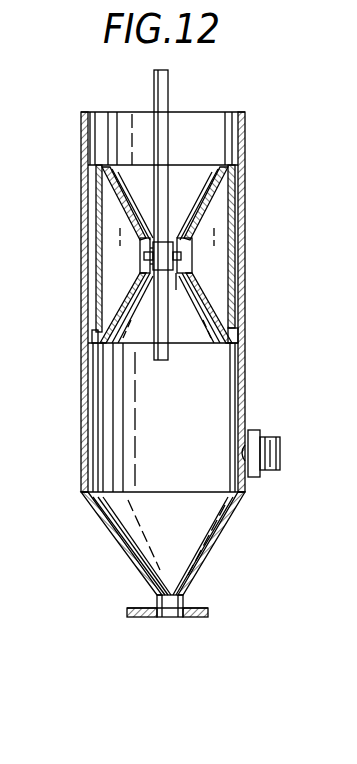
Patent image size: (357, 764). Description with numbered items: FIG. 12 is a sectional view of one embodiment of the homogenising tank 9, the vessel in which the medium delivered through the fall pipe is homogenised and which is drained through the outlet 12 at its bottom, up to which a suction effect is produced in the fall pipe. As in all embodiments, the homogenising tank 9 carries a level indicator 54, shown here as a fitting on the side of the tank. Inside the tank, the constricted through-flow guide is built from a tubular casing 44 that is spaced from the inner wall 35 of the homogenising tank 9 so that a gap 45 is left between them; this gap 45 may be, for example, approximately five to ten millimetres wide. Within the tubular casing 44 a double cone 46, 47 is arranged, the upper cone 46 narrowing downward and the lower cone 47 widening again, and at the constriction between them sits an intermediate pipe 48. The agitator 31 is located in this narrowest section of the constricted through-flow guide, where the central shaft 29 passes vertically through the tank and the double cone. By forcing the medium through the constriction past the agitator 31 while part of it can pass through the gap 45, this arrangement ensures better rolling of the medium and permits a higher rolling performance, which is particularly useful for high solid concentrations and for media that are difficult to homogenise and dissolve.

The homogenising tank 9 is at (247, 133).
The outlet 12 is at (173, 603).
The rod 29 is at (168, 78).
The agitator 31 is at (176, 275).
The inner wall 35 is at (232, 378).
The tubular casing 44 is at (97, 232).
The gap 45 is at (233, 190).
The double cone 46 is at (203, 215).
The double cone 47 is at (213, 305).
The intermediate pipe 48 is at (140, 263).
The level indicator 54 is at (270, 452).